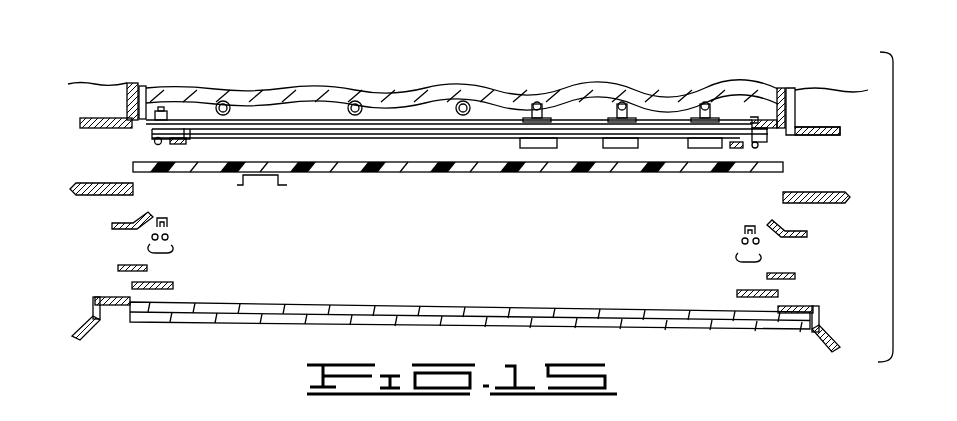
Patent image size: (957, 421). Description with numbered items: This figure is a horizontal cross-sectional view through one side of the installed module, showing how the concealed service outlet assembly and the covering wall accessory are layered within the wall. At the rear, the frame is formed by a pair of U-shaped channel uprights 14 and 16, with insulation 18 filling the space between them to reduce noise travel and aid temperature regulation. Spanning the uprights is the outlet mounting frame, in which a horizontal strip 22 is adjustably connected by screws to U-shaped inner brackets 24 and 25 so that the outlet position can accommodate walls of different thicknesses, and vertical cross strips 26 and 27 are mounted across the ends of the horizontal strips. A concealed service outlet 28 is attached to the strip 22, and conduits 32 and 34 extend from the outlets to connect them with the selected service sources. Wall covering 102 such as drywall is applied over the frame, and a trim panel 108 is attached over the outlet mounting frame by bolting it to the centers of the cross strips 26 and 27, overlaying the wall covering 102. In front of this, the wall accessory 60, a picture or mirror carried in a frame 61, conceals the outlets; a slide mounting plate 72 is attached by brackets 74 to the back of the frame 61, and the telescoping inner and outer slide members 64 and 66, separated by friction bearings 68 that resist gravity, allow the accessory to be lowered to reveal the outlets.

The upright 14 is at (92, 118).
The upright 16 is at (790, 86).
The insulation 18 is at (435, 95).
The strip 22 is at (320, 137).
The inner bracket 24 is at (143, 95).
The inner bracket 25 is at (780, 87).
The vertical cross strip 26 is at (184, 140).
The vertical cross strip 27 is at (740, 140).
The concealed service outlet 28 is at (617, 150).
The conduit 32 is at (358, 100).
The conduit 34 is at (541, 103).
The wall accessory 60 is at (762, 333).
The frame 61 is at (86, 314).
The inner slide member 64 is at (170, 222).
The outer slide member 66 is at (175, 251).
The friction bearing 68 is at (170, 238).
The slide mounting plate 72 is at (180, 286).
The bracket 74 is at (115, 268).
The wall covering 102 is at (93, 196).
The trim panel 108 is at (145, 215).